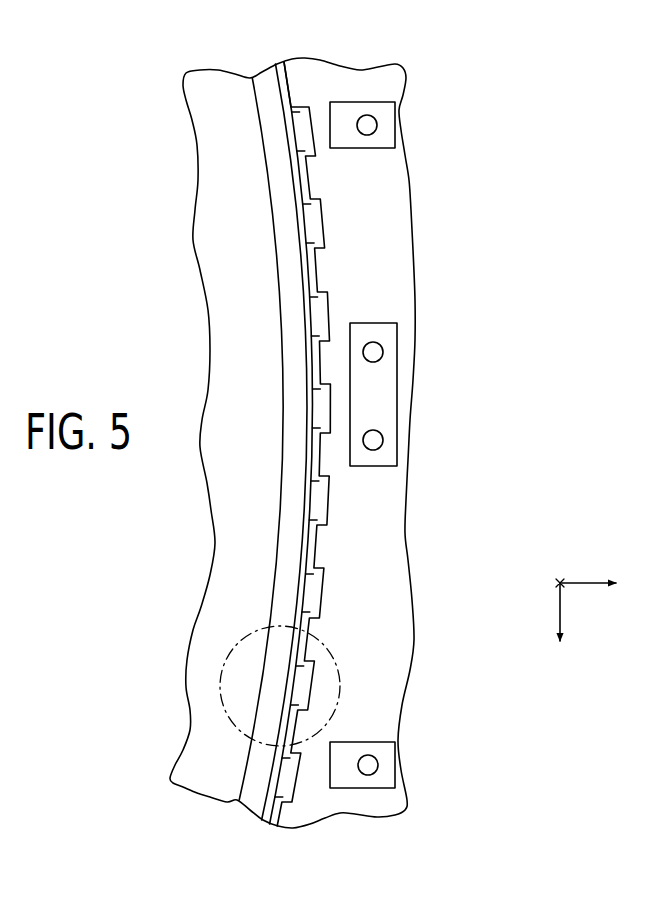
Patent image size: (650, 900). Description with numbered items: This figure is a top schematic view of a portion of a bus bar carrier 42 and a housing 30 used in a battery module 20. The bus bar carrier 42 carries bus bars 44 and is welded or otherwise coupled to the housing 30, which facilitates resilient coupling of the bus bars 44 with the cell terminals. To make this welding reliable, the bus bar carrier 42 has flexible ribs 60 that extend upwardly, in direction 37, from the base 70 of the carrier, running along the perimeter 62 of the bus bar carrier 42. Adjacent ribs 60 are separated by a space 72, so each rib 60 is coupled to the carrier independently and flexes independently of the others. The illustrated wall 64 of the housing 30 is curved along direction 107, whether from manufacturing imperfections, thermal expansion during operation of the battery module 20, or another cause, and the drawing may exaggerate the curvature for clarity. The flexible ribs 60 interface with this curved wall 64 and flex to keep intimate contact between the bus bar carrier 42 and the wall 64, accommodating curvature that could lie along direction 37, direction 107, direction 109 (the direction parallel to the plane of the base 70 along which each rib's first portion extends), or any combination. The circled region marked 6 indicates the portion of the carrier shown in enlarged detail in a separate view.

The battery module 20 is at (465, 65).
The housing 30 is at (252, 137).
The wall 64 is at (273, 168).
The perimeter 62 is at (308, 537).
The space 72 is at (301, 223).
The bus bars 44 is at (385, 122).
The flexible ribs 60 is at (308, 180).
The base 70 is at (387, 505).
The bus bar carrier 42 is at (406, 534).
The section view indicator 6 is at (247, 640).
The direction 109 is at (585, 581).
The direction 107 is at (562, 605).
The direction 37 is at (556, 582).